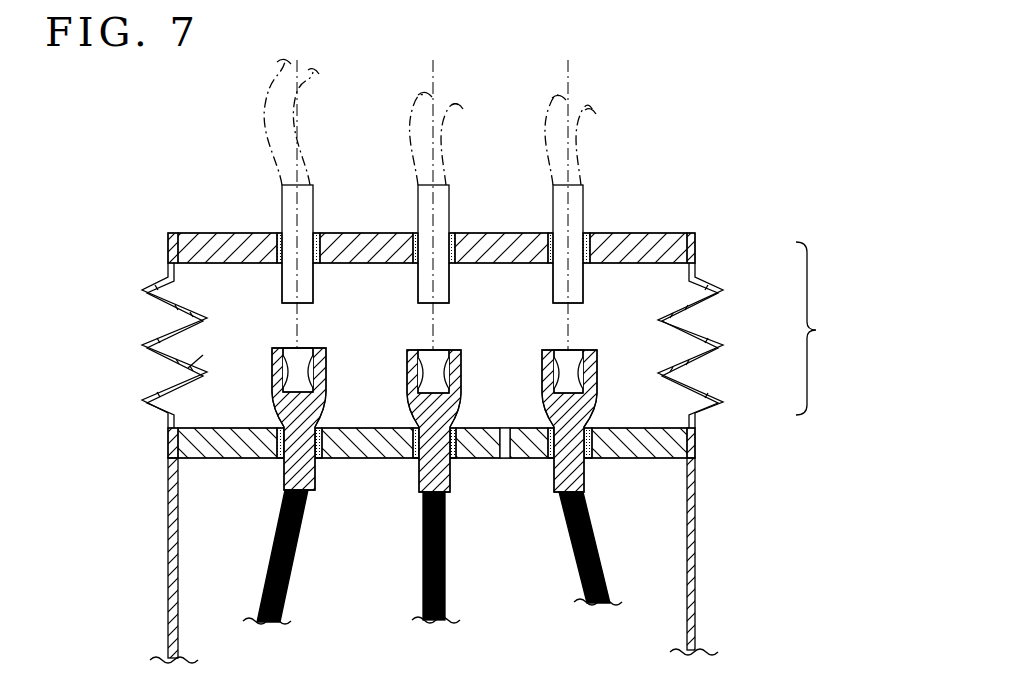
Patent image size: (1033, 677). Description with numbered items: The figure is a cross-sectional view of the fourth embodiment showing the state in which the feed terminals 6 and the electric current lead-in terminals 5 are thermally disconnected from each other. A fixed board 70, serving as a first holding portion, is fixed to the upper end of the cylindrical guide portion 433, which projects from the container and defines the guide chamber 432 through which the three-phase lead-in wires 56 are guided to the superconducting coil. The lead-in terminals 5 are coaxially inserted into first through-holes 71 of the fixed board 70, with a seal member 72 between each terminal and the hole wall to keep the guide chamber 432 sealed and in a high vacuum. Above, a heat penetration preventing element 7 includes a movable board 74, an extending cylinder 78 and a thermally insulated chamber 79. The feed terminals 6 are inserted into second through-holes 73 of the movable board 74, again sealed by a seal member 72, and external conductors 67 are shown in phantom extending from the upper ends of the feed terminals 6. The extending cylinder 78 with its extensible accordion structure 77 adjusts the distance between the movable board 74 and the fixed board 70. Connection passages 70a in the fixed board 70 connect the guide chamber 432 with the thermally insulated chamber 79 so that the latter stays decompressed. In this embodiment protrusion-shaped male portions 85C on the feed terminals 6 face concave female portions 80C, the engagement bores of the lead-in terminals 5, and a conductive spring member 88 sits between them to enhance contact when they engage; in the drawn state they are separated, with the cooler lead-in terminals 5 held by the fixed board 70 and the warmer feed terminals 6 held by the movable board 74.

The electric current lead-in terminal 5 is at (318, 405).
The feed terminal 6 is at (313, 193).
The heat penetration preventing element 7 is at (819, 328).
The electric current lead-in wire 56 is at (270, 562).
The wire 67 is at (270, 110).
The fixed board 70 is at (218, 445).
The connection passage 70a is at (507, 462).
The first through-hole 71 is at (318, 460).
The seal member 72 is at (277, 232).
The second through-hole 73 is at (468, 240).
The movable board 74 is at (655, 237).
The accordion structure 77 is at (163, 310).
The extending cylinder 78 is at (140, 290).
The thermally insulated chamber 79 is at (178, 368).
The female portion 80C is at (293, 355).
The male portion 85C is at (306, 285).
The spring member 88 is at (280, 374).
The guide chamber 432 is at (202, 585).
The guide portion 433 is at (172, 636).